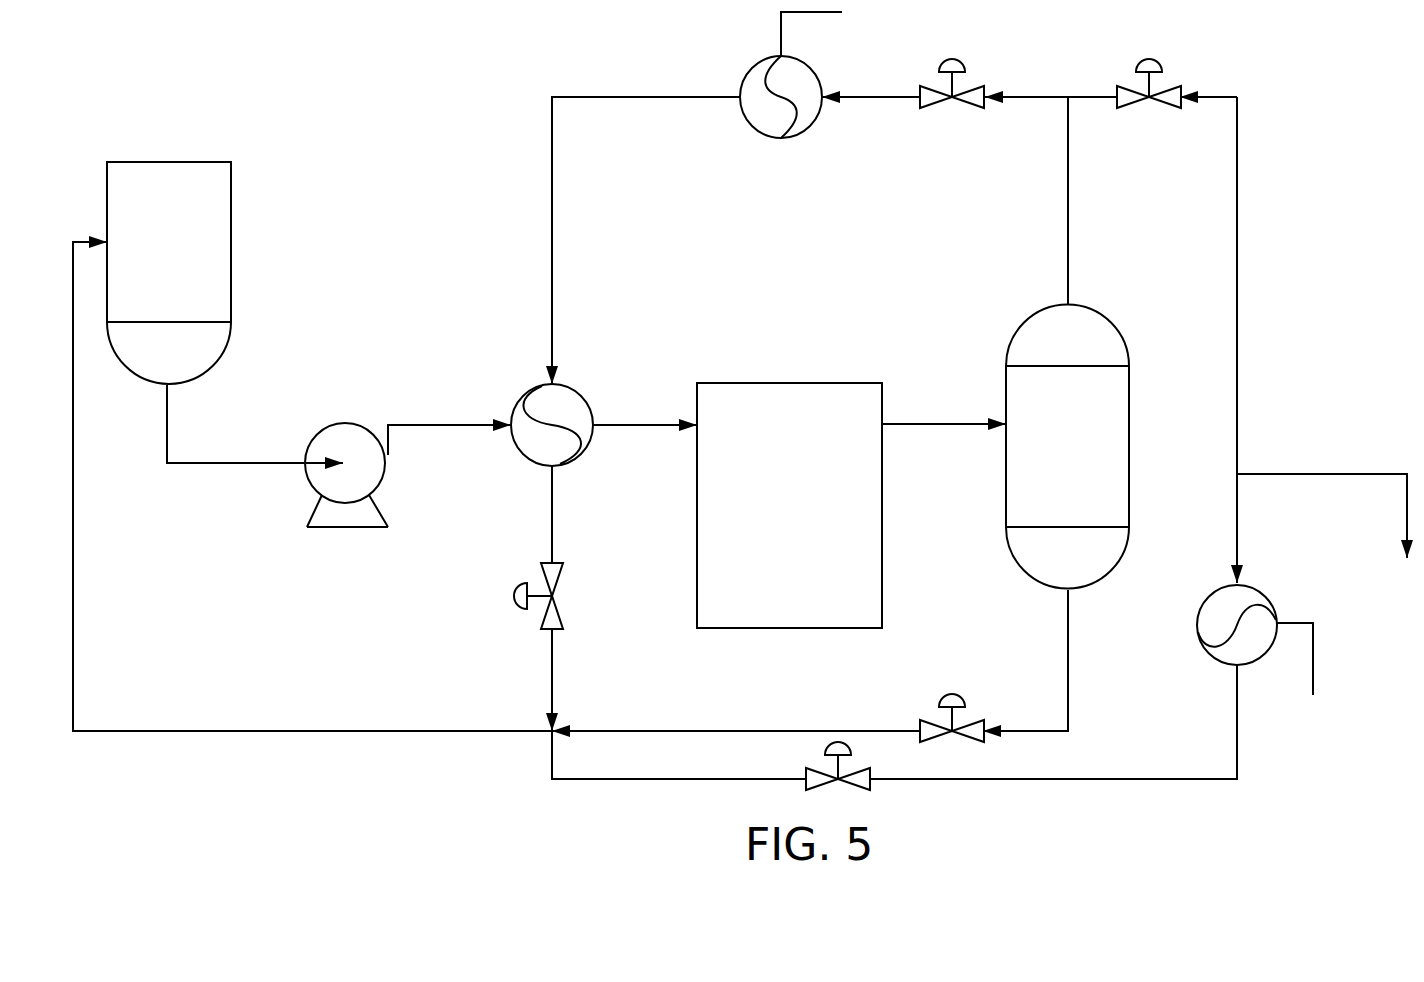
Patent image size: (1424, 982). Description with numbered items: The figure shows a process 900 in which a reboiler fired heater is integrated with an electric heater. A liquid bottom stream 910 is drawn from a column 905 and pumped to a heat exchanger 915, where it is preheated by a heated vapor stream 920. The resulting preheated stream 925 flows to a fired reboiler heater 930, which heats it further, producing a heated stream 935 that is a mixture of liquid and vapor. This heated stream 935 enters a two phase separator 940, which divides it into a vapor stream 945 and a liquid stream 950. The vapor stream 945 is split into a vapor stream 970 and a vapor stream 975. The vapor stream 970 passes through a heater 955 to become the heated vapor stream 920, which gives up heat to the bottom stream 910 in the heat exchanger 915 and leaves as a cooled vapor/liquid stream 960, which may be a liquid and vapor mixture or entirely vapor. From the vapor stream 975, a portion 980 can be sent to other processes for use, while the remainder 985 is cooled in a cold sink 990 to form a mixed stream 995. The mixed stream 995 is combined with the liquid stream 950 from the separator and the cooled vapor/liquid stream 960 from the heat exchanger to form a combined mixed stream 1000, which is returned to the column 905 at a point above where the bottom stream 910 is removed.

The process 900 is at (382, 68).
The column 905 is at (207, 162).
The bottom stream 910 is at (245, 463).
The heat exchanger 915 is at (530, 392).
The heated vapor stream 920 is at (553, 278).
The preheated stream 925 is at (646, 424).
The fired reboiler heater 930 is at (790, 383).
The heated stream 935 is at (945, 424).
The two phase separator 940 is at (1108, 321).
The vapor stream 945 is at (1069, 197).
The liquid stream 950 is at (1068, 660).
The heater 955 is at (766, 64).
The cooled vapor/liquid stream 960 is at (553, 513).
The vapor stream 970 is at (1035, 97).
The vapor stream 975 is at (1210, 97).
The portion 980 is at (1353, 474).
The remainder 985 is at (1236, 509).
The cold sink 990 is at (1207, 596).
The mixed stream 995 is at (1177, 779).
The combined mixed stream 1000 is at (415, 731).